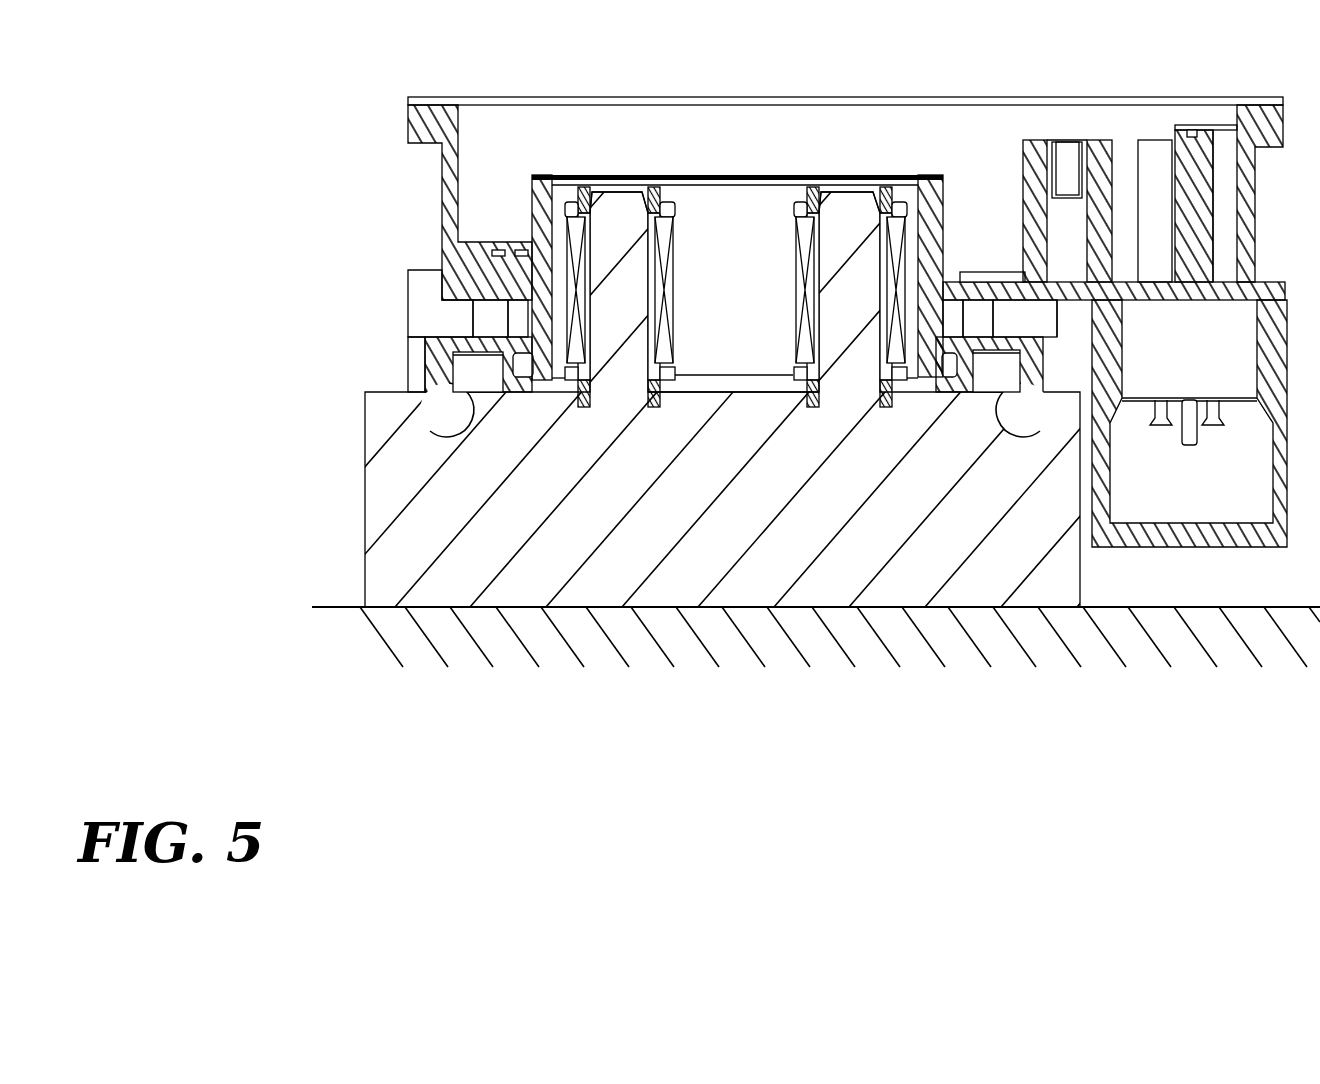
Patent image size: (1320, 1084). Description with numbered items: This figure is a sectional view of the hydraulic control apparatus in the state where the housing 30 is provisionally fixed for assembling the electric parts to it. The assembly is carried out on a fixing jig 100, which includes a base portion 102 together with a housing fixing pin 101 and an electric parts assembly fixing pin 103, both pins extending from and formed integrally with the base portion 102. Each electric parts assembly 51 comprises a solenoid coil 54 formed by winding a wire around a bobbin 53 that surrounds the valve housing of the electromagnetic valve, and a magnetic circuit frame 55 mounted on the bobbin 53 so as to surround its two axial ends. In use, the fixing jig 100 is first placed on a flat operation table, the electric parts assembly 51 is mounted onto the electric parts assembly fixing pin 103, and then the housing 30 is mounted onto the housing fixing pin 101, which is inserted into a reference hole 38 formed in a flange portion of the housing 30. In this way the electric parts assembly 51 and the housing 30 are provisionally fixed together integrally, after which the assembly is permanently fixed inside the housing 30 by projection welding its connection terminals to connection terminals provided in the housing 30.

The housing 30 is at (427, 110).
The reference hole 38 is at (432, 440).
The electric parts assembly 51 is at (749, 203).
The bobbin 53 is at (672, 205).
The solenoid coil 54 is at (667, 237).
The magnetic circuit frame 55 is at (655, 187).
The fixing jig 100 is at (588, 580).
The housing fixing pin 101 is at (482, 373).
The base portion 102 is at (787, 537).
The electric parts assembly fixing pin 103 is at (616, 330).